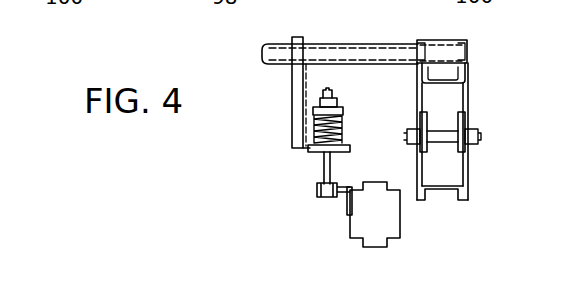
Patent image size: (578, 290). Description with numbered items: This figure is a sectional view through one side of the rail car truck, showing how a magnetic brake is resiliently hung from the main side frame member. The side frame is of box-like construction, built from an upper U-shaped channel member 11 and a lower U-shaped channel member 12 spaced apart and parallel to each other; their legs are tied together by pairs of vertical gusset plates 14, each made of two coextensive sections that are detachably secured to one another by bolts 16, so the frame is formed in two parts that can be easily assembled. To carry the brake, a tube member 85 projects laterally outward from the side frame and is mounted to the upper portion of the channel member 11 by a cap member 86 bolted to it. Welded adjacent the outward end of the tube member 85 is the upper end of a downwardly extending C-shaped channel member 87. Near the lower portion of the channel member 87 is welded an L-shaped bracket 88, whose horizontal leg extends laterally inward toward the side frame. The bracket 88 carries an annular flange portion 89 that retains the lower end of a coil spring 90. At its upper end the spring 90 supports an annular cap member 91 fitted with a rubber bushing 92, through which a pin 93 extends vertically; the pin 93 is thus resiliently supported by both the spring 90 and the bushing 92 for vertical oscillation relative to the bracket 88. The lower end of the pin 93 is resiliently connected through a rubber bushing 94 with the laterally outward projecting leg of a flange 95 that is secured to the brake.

The upper U-shaped channel member 11 is at (464, 76).
The lower U-shaped channel member 12 is at (447, 193).
The gusset plates 14 is at (422, 167).
The bolts 16 is at (481, 137).
The tube members 85 is at (357, 50).
The cap members 86 is at (465, 43).
The C-shaped channel member 87 is at (300, 78).
The L-shaped bracket 88 is at (313, 150).
The annular flange portion 89 is at (350, 148).
The coil spring 90 is at (342, 130).
The annular cap member 91 is at (343, 111).
The rubber bushing 92 is at (337, 103).
The pin 93 is at (330, 98).
The rubber bushing 94 is at (317, 194).
The flange 95 is at (347, 198).